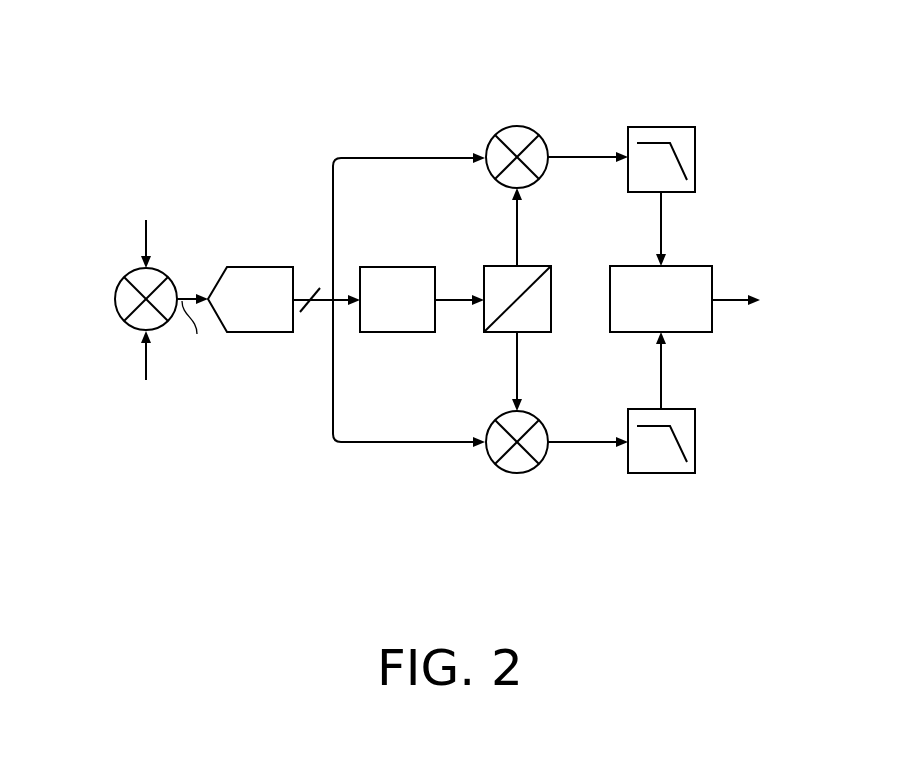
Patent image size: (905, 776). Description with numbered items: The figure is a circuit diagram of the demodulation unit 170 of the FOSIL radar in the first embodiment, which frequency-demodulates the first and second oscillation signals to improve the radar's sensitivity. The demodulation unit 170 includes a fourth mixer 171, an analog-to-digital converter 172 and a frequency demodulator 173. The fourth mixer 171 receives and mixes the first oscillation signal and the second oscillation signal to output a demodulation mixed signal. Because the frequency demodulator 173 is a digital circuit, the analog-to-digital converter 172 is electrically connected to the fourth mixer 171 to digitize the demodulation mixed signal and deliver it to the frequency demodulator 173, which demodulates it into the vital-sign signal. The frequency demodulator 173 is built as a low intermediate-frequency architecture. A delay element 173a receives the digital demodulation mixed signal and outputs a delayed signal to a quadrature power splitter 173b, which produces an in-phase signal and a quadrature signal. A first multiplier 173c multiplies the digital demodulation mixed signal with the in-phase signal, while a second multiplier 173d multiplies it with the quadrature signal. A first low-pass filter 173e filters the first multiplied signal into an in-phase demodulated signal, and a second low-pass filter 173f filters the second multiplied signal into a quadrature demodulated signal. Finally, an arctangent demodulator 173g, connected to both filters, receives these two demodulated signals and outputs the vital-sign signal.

The demodulation unit 170 is at (187, 101).
The fourth mixer 171 is at (115, 287).
The analog-to-digital converter 172 is at (257, 267).
The frequency demodulator 173 is at (377, 109).
The delay element 173a is at (397, 267).
The quadrature power splitter 173b is at (497, 333).
The first multiplier 173c is at (517, 126).
The second multiplier 173d is at (517, 473).
The first low-pass filter 173e is at (660, 127).
The second low-pass filter 173f is at (660, 473).
The arctangent demodulator 173g is at (620, 266).